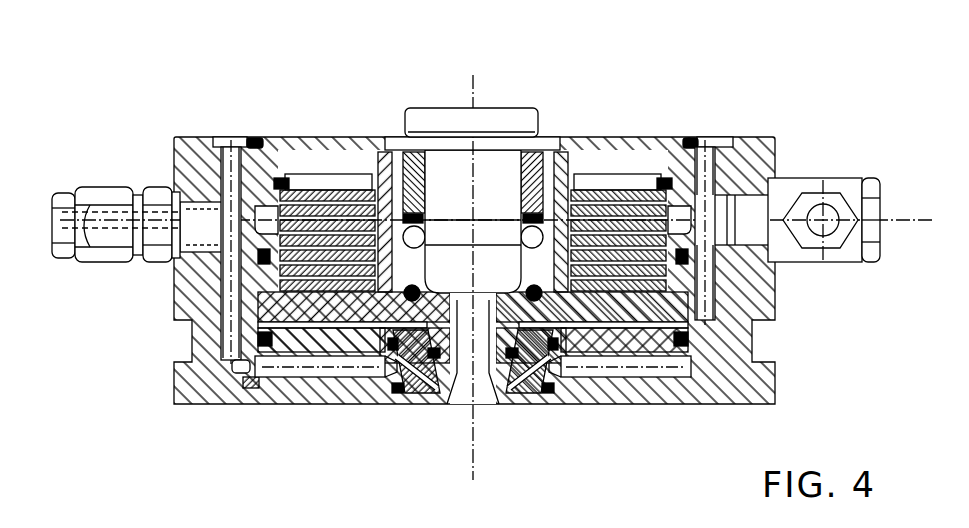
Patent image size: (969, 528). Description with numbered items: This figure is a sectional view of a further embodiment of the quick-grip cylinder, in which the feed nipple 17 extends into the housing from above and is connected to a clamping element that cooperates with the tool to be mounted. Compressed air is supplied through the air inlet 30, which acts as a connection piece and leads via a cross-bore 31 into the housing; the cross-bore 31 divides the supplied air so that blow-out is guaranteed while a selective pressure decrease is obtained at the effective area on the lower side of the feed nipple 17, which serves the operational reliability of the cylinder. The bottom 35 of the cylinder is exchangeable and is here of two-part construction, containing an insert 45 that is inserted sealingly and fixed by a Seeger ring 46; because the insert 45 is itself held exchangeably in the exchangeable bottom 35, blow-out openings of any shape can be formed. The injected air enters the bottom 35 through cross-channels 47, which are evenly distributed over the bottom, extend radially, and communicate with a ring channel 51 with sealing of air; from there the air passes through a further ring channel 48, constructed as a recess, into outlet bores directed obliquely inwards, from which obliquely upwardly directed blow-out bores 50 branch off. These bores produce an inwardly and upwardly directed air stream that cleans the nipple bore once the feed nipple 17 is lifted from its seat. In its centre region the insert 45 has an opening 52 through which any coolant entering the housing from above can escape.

The feed nipple 17 is at (497, 117).
The air inlet 30 is at (105, 213).
The cross-bore 31 is at (212, 145).
The bottom 35 is at (640, 404).
The insert 45 is at (528, 402).
The Seeger ring 46 is at (405, 391).
The cross-channel 47 is at (297, 365).
The ring channel 48 is at (387, 377).
The blow-out bore 50 is at (453, 392).
The ring channel 51 is at (247, 368).
The opening 52 is at (485, 387).